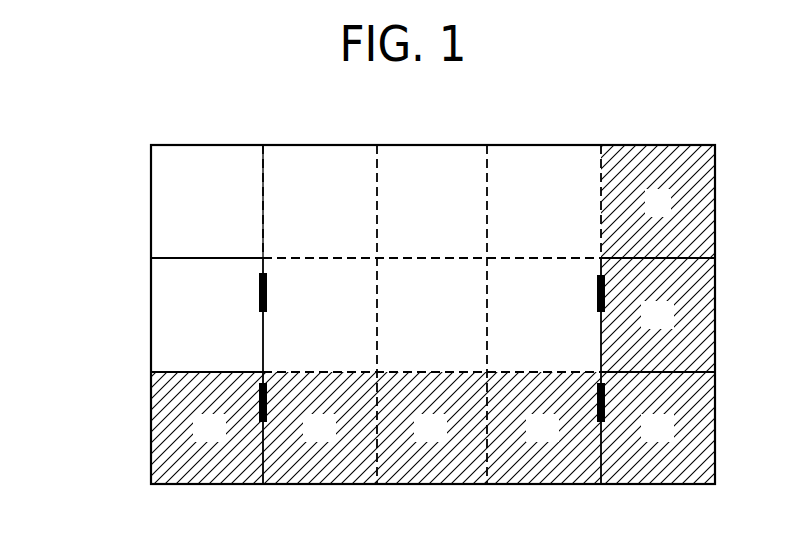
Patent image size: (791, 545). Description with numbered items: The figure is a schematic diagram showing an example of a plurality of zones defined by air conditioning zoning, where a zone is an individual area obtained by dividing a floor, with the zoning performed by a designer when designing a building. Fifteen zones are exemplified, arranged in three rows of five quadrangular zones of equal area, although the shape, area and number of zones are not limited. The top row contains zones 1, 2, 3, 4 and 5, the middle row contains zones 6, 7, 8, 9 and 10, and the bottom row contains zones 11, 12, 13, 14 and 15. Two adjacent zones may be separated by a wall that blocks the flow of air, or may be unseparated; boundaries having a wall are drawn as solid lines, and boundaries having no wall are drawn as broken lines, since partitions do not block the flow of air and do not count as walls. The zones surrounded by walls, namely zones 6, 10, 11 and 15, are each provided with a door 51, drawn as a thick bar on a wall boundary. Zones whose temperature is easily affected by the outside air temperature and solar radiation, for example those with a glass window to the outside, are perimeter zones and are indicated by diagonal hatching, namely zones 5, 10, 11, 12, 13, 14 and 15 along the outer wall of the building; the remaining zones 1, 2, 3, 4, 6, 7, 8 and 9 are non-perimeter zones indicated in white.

The zone 1 is at (207, 201).
The zone 2 is at (320, 201).
The zone 3 is at (432, 201).
The zone 4 is at (544, 201).
The zone 5 is at (658, 201).
The zone 6 is at (207, 315).
The zone 7 is at (320, 315).
The zone 8 is at (432, 315).
The zone 9 is at (544, 315).
The zone 10 is at (658, 315).
The zone 11 is at (207, 428).
The zone 12 is at (320, 428).
The zone 13 is at (432, 428).
The zone 14 is at (544, 428).
The zone 15 is at (658, 428).
The door 51 is at (259, 288).